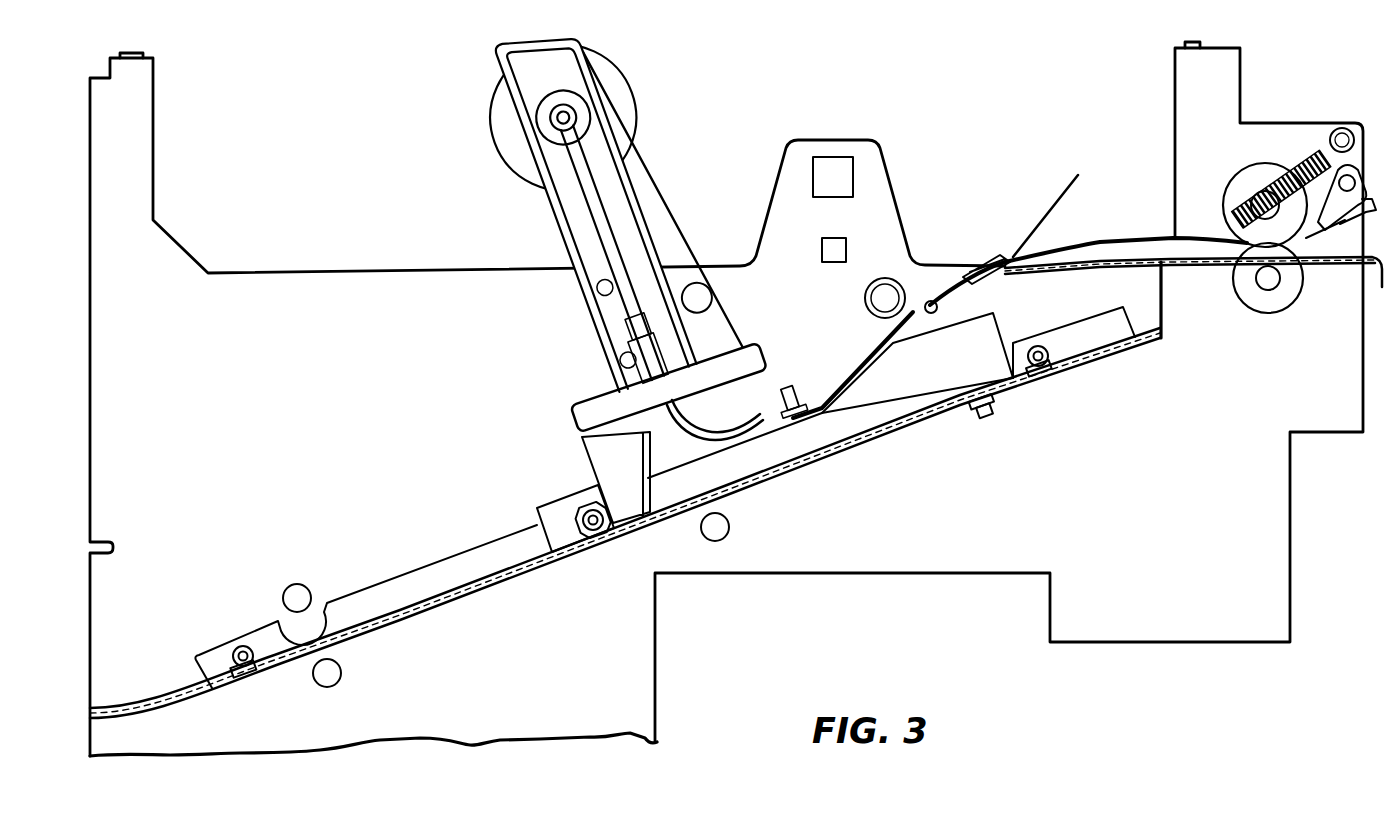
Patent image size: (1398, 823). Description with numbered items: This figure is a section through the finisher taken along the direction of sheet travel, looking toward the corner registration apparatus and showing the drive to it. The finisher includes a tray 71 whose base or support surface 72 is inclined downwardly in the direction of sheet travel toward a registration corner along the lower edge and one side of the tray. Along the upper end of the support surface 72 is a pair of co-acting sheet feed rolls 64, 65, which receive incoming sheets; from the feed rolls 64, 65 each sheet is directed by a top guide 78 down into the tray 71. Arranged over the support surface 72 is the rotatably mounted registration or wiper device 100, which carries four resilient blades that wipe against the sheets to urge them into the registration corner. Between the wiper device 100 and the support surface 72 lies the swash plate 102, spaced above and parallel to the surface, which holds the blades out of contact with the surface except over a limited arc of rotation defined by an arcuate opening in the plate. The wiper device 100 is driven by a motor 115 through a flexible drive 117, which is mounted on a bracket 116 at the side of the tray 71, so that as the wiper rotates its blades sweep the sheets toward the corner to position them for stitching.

The sheet feed roll 64 is at (1262, 314).
The sheet feed roll 65 is at (1257, 167).
The tray 71 is at (440, 620).
The support surface 72 is at (500, 572).
The top guide 78 is at (1104, 241).
The wiper device 100 is at (568, 416).
The swash plate 102 is at (848, 376).
The motor 115 is at (492, 147).
The bracket 116 is at (665, 223).
The flexible drive 117 is at (620, 160).